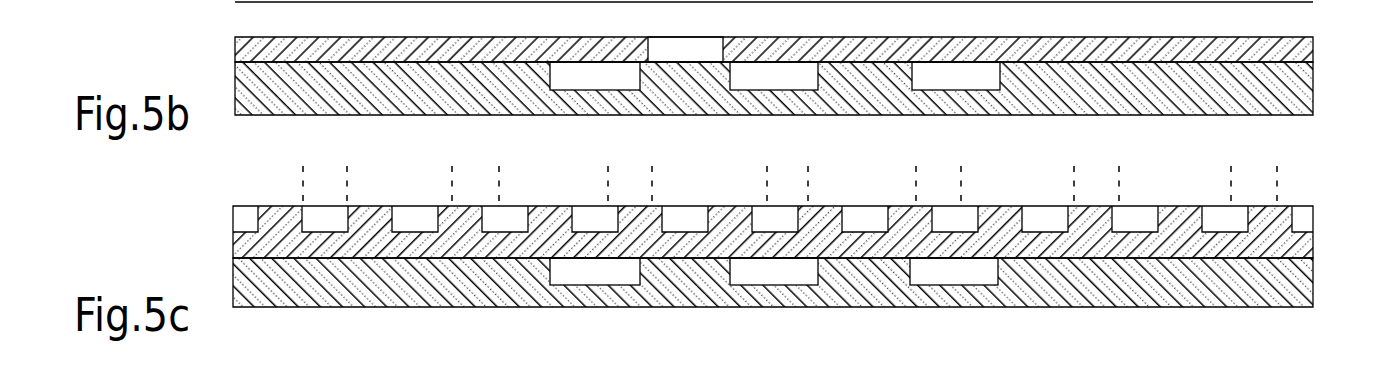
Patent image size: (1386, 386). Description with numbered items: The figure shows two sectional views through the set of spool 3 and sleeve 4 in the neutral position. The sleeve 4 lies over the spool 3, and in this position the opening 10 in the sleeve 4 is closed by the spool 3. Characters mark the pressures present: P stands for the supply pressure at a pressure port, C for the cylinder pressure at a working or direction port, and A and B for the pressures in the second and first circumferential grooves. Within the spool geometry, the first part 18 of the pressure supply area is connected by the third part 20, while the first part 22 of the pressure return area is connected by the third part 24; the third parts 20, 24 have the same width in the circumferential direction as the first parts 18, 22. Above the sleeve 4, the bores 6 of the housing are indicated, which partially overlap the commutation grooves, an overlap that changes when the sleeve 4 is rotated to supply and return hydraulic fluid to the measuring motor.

In FIG. 5B, the spool 3 is at (1300, 97).
In FIG. 5C, the spool 3 is at (1295, 294).
In FIG. 5B, the sleeve 4 is at (1298, 55).
In FIG. 5C, the sleeve 4 is at (1298, 248).
In FIG. 5C, the bores 6 is at (1263, 196).
In FIG. 5B, the opening 10 is at (672, 52).
In FIG. 5B, the first part of the pressure supply area 18 is at (786, 71).
In FIG. 5C, the third part of the pressure supply area 20 is at (742, 272).
In FIG. 5B, the first part of the pressure return area 22 is at (573, 72).
In FIG. 5C, the third part of the pressure return area 24 is at (622, 273).